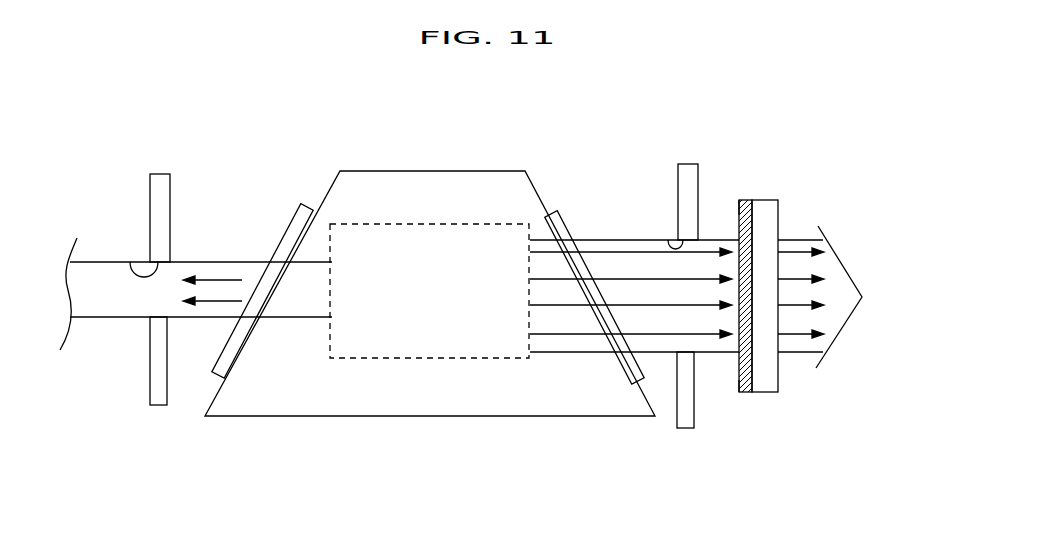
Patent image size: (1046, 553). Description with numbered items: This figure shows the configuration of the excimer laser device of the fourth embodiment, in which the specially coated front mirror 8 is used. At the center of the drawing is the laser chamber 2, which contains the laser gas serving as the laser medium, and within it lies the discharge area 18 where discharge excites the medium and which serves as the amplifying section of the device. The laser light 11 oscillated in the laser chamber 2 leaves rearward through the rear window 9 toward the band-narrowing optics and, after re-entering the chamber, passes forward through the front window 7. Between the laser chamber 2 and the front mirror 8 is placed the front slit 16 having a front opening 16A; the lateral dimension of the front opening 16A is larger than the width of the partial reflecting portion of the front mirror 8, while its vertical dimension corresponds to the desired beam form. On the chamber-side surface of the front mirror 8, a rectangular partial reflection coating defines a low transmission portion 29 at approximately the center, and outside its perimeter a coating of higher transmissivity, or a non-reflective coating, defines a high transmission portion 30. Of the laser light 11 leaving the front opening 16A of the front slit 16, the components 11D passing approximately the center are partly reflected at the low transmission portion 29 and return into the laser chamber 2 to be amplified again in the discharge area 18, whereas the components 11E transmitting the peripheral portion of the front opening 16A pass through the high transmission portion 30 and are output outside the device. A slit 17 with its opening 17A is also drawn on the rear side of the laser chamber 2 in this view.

The laser chamber 2 is at (500, 171).
The front window 7 is at (565, 218).
The front mirror 8 is at (770, 200).
The rear window 9 is at (300, 215).
The laser light 11 is at (88, 262).
The components passing approximately the center 11D is at (230, 300).
The components transmitting the peripheral portion 11E is at (713, 240).
The front slit 16 is at (690, 164).
The front opening 16A is at (670, 240).
The pin 17 is at (163, 174).
The pin base 17A is at (130, 262).
The discharge area 18 is at (430, 224).
The low transmission portion 29 is at (720, 305).
The high transmission portion 30 is at (739, 217).